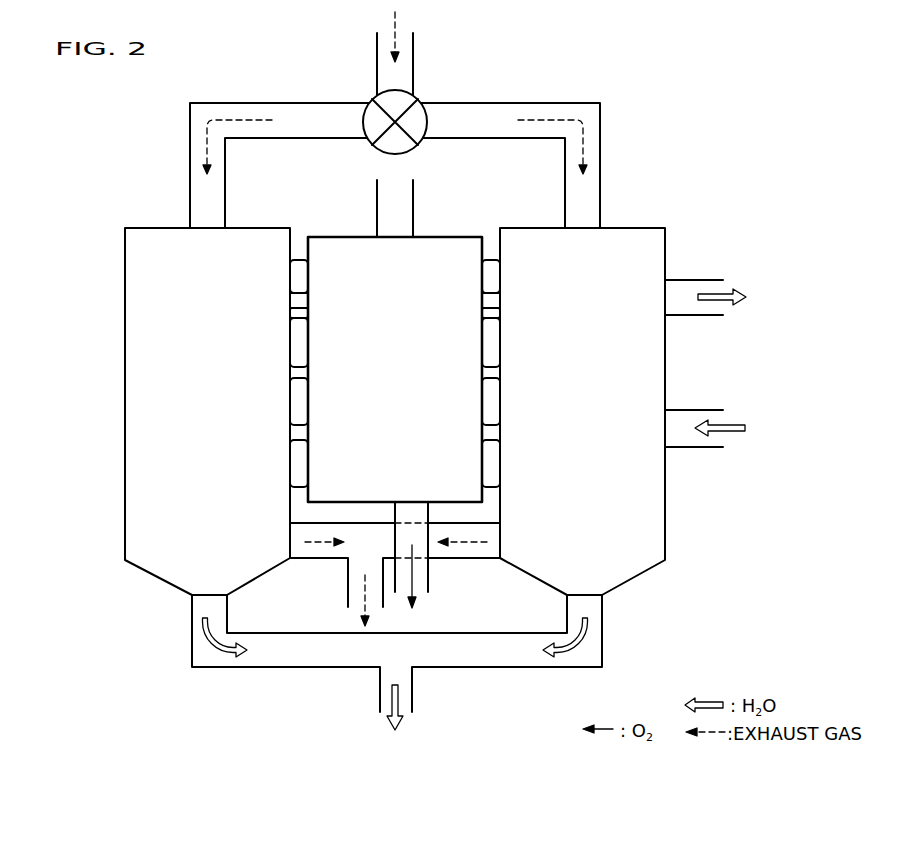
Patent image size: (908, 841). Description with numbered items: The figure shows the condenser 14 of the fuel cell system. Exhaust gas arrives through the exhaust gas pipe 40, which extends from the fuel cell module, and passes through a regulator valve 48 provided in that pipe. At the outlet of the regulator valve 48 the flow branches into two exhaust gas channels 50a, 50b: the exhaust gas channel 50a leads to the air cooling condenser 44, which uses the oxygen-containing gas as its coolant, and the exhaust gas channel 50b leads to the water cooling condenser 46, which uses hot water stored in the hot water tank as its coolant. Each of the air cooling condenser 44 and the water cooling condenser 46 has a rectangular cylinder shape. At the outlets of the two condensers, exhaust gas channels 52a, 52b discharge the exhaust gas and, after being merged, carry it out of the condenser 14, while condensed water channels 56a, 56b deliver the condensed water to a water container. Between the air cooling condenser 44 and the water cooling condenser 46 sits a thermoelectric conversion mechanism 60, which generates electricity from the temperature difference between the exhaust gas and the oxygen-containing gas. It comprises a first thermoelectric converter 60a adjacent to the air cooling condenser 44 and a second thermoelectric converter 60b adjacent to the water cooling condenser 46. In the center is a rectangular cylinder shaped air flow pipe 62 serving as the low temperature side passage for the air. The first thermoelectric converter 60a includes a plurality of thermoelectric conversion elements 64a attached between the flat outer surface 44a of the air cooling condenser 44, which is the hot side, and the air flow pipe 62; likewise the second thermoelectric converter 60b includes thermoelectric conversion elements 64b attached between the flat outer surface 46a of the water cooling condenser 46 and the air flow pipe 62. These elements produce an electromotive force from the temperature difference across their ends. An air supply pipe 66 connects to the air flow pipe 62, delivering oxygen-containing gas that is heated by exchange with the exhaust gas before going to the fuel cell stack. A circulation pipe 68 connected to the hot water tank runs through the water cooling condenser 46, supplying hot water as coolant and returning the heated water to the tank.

The condenser 14 is at (592, 45).
The exhaust gas pipe 40 is at (405, 70).
The air cooling condenser 44 is at (122, 227).
The flat outer surface 44a is at (308, 296).
The water cooling condenser 46 is at (670, 227).
The flat outer surface 46a is at (484, 296).
The regulator valve 48 is at (373, 97).
The exhaust gas channel 50a is at (235, 105).
The exhaust gas channel 50b is at (563, 105).
The exhaust gas channel 52a is at (330, 515).
The exhaust gas channel 52b is at (481, 556).
The condensed water channel 56a is at (282, 668).
The condensed water channel 56b is at (527, 668).
The thermoelectric conversion mechanism 60 is at (395, 211).
The first thermoelectric converter 60a is at (314, 248).
The second thermoelectric converter 60b is at (477, 248).
The air flow pipe 62 is at (482, 396).
The thermoelectric conversion elements 64a is at (302, 345).
The thermoelectric conversion elements 64b is at (492, 343).
The air supply pipe 66 is at (423, 572).
The circulation pipe 68 is at (697, 443).